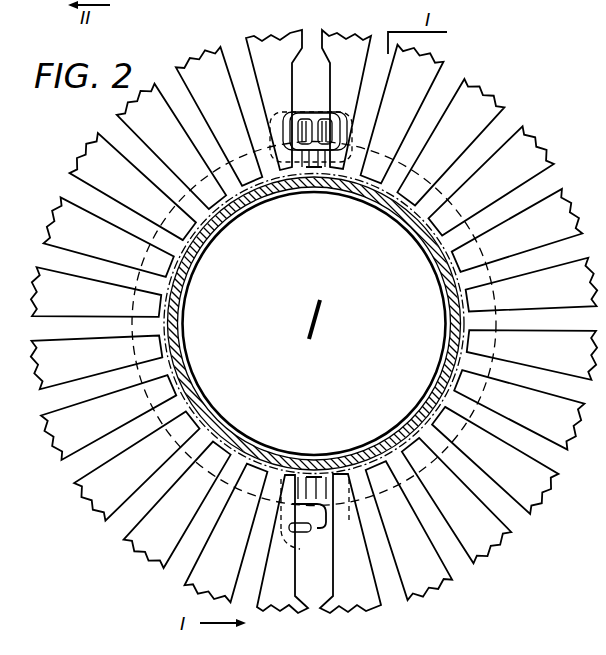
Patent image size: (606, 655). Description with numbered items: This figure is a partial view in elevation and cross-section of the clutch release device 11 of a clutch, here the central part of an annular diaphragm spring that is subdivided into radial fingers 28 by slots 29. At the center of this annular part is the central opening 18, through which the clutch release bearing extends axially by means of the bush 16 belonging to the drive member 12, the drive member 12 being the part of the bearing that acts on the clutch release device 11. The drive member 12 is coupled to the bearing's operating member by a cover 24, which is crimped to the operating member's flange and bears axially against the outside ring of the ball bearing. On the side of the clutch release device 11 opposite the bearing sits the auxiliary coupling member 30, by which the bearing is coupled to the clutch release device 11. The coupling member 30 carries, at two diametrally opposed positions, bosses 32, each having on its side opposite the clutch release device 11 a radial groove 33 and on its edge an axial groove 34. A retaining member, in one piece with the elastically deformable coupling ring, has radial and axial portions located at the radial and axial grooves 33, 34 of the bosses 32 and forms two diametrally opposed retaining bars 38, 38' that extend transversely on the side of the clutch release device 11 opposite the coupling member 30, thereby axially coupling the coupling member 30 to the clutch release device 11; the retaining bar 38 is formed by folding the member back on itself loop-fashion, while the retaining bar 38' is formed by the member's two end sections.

The clutch release device 11 is at (450, 70).
The drive member 12 is at (314, 323).
The bush 16 is at (267, 205).
The central opening 18 is at (396, 214).
The cover 24 is at (141, 17).
The radial fingers 28 is at (332, 346).
The slots 29 is at (79, 404).
The coupling member 30 is at (485, 220).
The bosses 32 is at (283, 113).
The radial groove 33 is at (337, 180).
The axial groove 34 is at (313, 180).
The retaining bar 38 is at (348, 123).
The retaining bar 38' is at (305, 468).